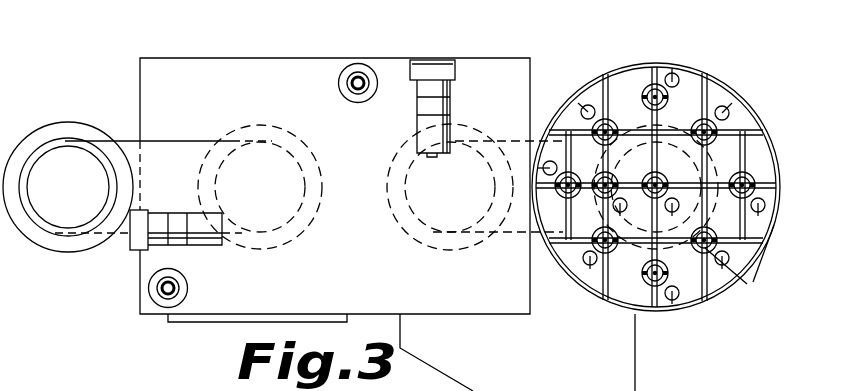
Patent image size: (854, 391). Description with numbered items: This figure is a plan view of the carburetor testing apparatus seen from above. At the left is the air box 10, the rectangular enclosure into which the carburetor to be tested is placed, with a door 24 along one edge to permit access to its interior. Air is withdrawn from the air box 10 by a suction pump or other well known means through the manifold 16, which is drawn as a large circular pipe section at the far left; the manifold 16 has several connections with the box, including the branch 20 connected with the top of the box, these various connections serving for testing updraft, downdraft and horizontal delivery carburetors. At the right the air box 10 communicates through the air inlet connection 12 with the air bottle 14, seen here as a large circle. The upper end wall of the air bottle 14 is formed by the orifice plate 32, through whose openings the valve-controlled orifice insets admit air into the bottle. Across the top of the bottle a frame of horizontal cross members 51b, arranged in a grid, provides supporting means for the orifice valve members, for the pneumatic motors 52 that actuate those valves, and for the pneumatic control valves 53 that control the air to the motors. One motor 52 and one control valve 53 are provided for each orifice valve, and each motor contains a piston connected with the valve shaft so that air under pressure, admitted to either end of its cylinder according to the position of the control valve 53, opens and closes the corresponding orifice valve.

The air box 10 is at (252, 66).
The air inlet connection 12 is at (536, 147).
The air bottle 14 is at (687, 62).
The manifold 16 is at (65, 141).
The branch 20 is at (188, 141).
The door 24 is at (188, 322).
The orifice plate 32 is at (632, 77).
The horizontal cross members 51b is at (705, 90).
The pneumatic motors 52 is at (601, 142).
The pneumatic control valves 53 is at (767, 299).